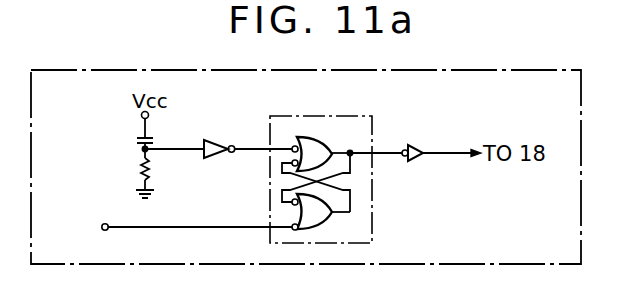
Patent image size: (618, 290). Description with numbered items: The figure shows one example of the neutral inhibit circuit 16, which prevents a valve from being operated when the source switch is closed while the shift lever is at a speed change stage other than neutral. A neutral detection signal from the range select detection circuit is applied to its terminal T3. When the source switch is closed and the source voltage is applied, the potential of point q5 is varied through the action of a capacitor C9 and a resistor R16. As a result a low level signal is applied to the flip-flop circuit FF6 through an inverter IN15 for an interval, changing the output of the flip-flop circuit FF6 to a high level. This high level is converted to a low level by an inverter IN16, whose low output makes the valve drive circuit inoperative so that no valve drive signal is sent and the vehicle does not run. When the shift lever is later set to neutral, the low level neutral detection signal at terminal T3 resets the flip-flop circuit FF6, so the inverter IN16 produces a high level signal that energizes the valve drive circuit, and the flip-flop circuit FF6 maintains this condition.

The neutral inhibit circuit 16 is at (525, 70).
The capacitor C9 is at (137, 137).
The resistor R16 is at (138, 168).
The point q5 is at (150, 150).
The terminal T3 is at (101, 231).
The inverter IN15 is at (220, 140).
The inverter IN16 is at (413, 147).
The flip-flop circuit FF6 is at (298, 113).